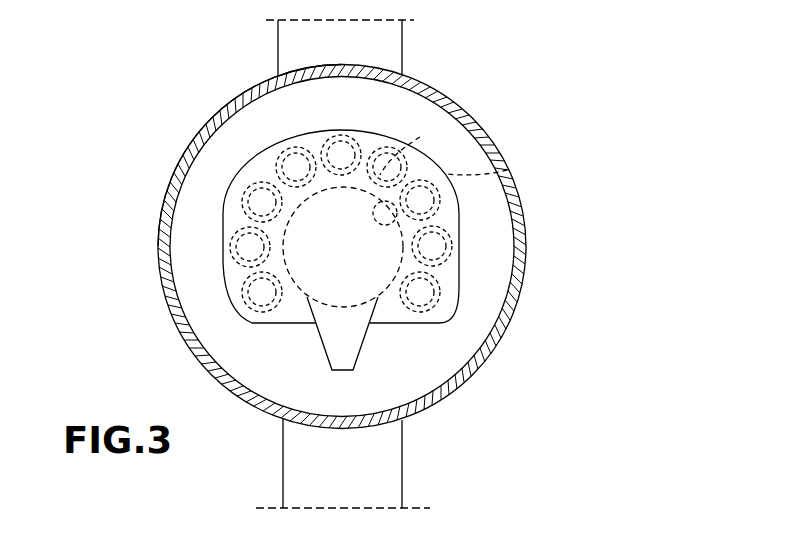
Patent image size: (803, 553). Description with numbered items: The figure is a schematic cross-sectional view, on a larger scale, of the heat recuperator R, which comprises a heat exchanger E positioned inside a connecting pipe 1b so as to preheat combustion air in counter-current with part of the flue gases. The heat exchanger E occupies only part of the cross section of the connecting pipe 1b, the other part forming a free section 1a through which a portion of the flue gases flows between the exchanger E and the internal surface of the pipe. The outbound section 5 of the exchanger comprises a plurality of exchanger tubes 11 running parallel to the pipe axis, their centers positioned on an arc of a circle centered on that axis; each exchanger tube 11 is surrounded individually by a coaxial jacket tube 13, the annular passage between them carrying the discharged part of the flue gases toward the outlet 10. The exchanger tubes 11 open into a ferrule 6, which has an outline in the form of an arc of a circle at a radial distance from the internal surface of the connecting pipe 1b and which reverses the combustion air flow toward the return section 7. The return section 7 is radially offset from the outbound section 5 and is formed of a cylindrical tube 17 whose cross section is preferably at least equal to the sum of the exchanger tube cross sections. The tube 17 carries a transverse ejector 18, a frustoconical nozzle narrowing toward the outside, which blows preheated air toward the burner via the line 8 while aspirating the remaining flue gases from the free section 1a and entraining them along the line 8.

The free section 1a is at (458, 338).
The connecting pipe 1b is at (203, 128).
The outlet 10 is at (278, 47).
The line 8 is at (402, 467).
The cylindrical tube 17 is at (255, 227).
The transverse ejector 18 is at (325, 335).
The ferrule 6 is at (370, 250).
The outbound section 5 is at (379, 152).
The return section 7 is at (380, 206).
The exchanger tubes 11 is at (420, 137).
The heat exchanger E is at (425, 159).
The jacket tubes 13 is at (507, 170).
The heat recuperator R is at (610, 167).